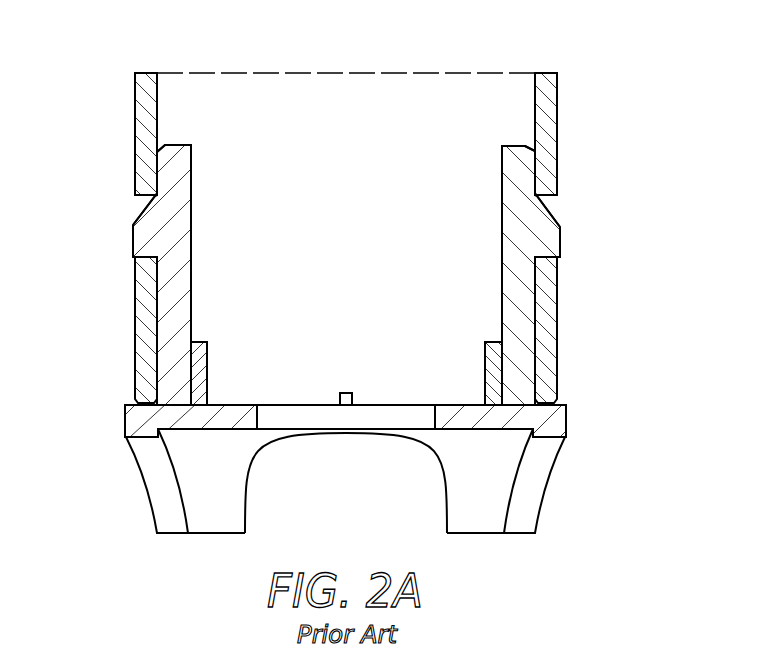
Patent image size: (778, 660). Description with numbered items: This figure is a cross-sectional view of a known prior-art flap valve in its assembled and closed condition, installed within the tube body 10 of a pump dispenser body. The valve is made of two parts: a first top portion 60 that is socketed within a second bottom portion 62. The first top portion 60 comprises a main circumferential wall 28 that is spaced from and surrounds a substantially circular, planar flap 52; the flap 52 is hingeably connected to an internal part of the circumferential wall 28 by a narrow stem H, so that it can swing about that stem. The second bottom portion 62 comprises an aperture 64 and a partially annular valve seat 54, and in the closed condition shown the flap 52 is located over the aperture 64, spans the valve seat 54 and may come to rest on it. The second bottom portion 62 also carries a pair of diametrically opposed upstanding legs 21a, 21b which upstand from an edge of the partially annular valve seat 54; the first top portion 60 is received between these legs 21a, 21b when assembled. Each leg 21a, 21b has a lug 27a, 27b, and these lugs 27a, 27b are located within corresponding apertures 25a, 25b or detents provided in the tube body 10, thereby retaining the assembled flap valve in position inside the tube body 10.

The tube body 10 is at (558, 90).
The upstanding leg 21a is at (177, 146).
The upstanding leg 21b is at (515, 146).
The aperture 25a is at (134, 197).
The aperture 25b is at (557, 197).
The lug 27a is at (133, 238).
The lug 27b is at (560, 240).
The main circumferential wall 28 is at (208, 351).
The second bottom portion 62 is at (205, 235).
The first top portion 60 is at (252, 389).
The narrow stem H is at (346, 393).
The flap 52 is at (386, 404).
The aperture 64 is at (258, 417).
The partially annular valve seat 54 is at (473, 431).